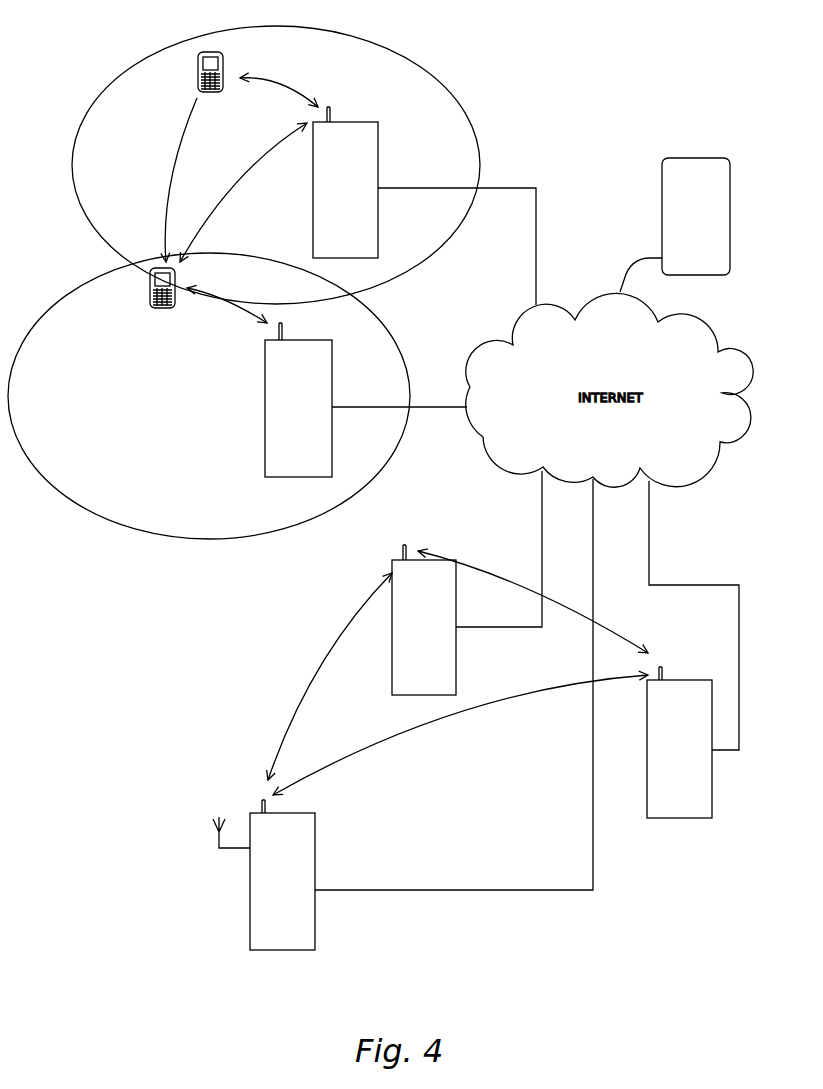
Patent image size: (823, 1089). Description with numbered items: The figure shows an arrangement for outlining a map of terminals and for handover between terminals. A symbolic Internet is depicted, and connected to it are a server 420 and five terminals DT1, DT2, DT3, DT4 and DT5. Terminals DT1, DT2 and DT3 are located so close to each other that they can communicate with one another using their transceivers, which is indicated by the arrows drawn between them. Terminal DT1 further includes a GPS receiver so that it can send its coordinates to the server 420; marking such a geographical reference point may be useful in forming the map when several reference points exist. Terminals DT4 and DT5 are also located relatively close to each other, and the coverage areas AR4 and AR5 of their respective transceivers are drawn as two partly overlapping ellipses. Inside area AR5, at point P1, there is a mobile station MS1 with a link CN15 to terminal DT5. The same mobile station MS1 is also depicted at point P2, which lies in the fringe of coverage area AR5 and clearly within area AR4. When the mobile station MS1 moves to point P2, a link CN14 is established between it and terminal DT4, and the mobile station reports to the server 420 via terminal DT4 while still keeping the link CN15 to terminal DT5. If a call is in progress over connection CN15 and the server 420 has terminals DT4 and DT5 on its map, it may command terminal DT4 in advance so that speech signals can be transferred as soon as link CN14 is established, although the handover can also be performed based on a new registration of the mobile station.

The coverage area AR5 is at (460, 107).
The coverage area AR4 is at (387, 327).
The mobile station MS1 is at (198, 68).
The point P1 is at (181, 176).
The point P2 is at (150, 248).
The link CN15 is at (278, 84).
The link CN14 is at (223, 300).
The terminal DT5 is at (368, 130).
The terminal DT4 is at (265, 408).
The terminal DT3 is at (448, 650).
The terminal DT2 is at (678, 820).
The terminal DT1 is at (255, 944).
The GPS receiver GPS is at (215, 827).
The server 420 is at (730, 217).